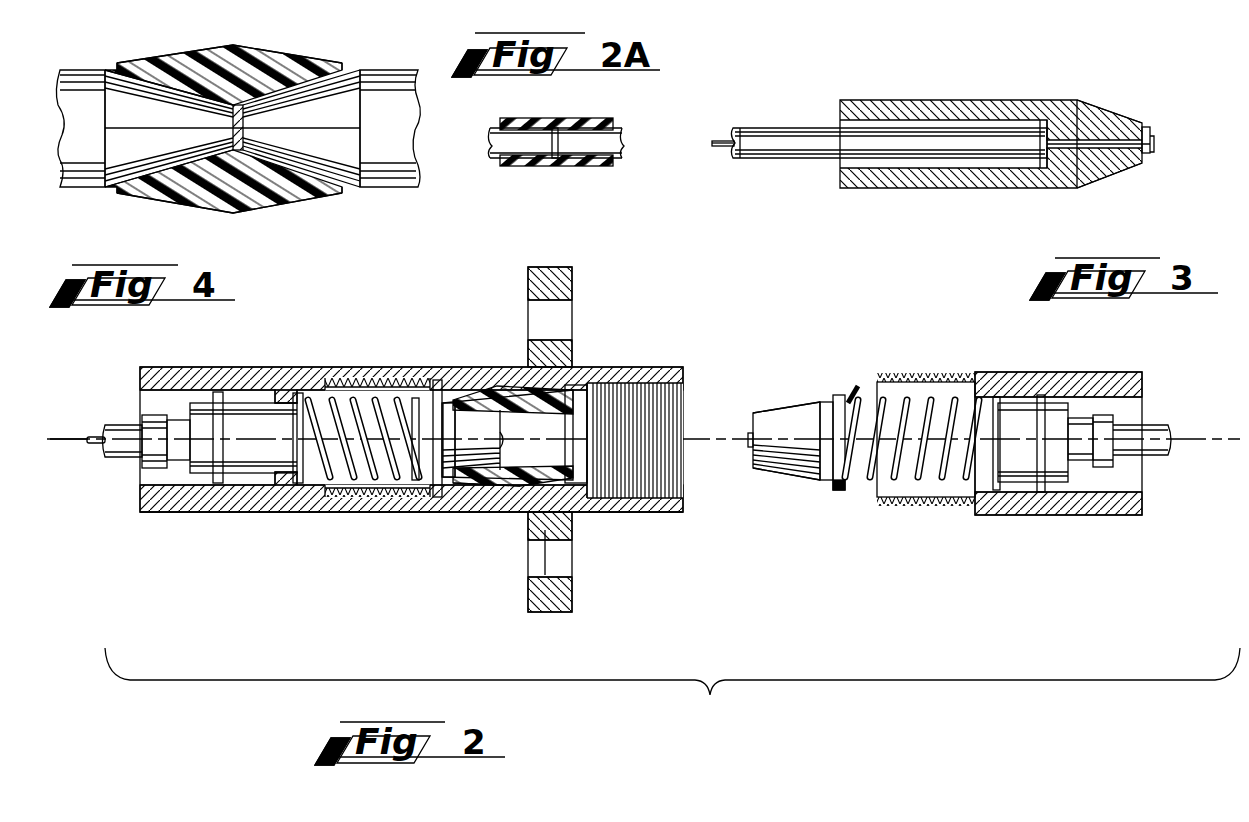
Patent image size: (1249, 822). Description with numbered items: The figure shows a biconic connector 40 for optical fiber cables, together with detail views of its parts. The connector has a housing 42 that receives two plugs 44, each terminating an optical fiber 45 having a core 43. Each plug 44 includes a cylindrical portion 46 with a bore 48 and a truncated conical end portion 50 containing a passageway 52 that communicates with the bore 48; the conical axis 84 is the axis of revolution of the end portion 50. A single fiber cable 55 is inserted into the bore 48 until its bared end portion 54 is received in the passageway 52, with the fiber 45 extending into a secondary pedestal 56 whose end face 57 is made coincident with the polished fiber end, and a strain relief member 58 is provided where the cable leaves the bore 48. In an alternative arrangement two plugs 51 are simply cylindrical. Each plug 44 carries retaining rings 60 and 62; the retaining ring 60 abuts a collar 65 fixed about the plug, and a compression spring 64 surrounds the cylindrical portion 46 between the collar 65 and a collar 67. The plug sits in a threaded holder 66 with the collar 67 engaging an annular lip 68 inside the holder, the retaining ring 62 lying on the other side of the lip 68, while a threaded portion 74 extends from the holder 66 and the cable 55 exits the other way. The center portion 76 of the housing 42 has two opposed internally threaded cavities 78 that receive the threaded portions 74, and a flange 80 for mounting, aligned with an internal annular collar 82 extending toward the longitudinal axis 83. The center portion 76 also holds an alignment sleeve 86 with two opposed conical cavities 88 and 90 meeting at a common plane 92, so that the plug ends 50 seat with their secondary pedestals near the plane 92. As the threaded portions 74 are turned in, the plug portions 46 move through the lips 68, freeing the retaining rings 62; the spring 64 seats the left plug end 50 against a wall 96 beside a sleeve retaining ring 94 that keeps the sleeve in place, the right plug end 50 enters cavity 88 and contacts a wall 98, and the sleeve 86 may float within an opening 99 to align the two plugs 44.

In FIG. 2, the biconic connector 40 is at (672, 692).
In FIG. 2, the housing 42 is at (337, 523).
In FIG. 3, the core 43 is at (722, 144).
In FIG. 4, the plug 44 is at (73, 213).
In FIG. 3, the plug 44 is at (921, 203).
In FIG. 2, the plug 44 is at (775, 508).
In FIG. 3, the optical fiber 45 is at (714, 140).
In FIG. 2, the optical fiber 45 is at (92, 444).
In FIG. 3, the cylindrical portion 46 is at (897, 103).
In FIG. 2, the cylindrical portion 46 is at (320, 445).
In FIG. 3, the bore 48 is at (1025, 118).
In FIG. 4, the end portion 50 is at (130, 95).
In FIG. 3, the end portion 50 is at (1110, 175).
In FIG. 2A, the cylindrical plug 51 is at (530, 155).
In FIG. 3, the passageway 52 is at (1135, 170).
In FIG. 3, the bared end portion 54 is at (1085, 150).
In FIG. 3, the single fiber cable 55 is at (814, 178).
In FIG. 2, the single fiber cable 55 is at (128, 425).
In FIG. 4, the secondary pedestal 56 is at (255, 170).
In FIG. 3, the secondary pedestal 56 is at (1150, 125).
In FIG. 2, the secondary pedestal 56 is at (775, 410).
In FIG. 3, the end face 57 is at (1156, 150).
In FIG. 2, the end face 57 is at (750, 435).
In FIG. 3, the strain relief member 58 is at (810, 120).
In FIG. 2, the retaining ring 60 is at (838, 492).
In FIG. 2, the retaining ring 62 is at (218, 490).
In FIG. 2, the compression spring 64 is at (868, 490).
In FIG. 2, the collar 65 is at (840, 395).
In FIG. 2, the threaded holder 66 is at (1065, 372).
In FIG. 2, the collar 67 is at (975, 500).
In FIG. 2, the annular lip 68 is at (1010, 488).
In FIG. 2, the threaded portion 74 is at (918, 382).
In FIG. 2, the center portion 76 is at (660, 367).
In FIG. 2, the internally threaded cavity 78 is at (395, 525).
In FIG. 2, the flange 80 is at (530, 280).
In FIG. 2, the annular collar 82 is at (562, 525).
In FIG. 2, the longitudinal axis 83 is at (45, 436).
In FIG. 2, the conical axis 84 is at (437, 392).
In FIG. 2, the alignment sleeve 86 is at (458, 488).
In FIG. 2, the conical cavity 88 is at (598, 380).
In FIG. 2, the conical cavity 90 is at (505, 450).
In FIG. 4, the common plane 92 is at (255, 128).
In FIG. 2, the common plane 92 is at (520, 387).
In FIG. 2, the sleeve retaining ring 94 is at (438, 405).
In FIG. 2, the wall 96 is at (450, 405).
In FIG. 2, the wall 98 is at (572, 405).
In FIG. 2, the opening 99 is at (548, 485).